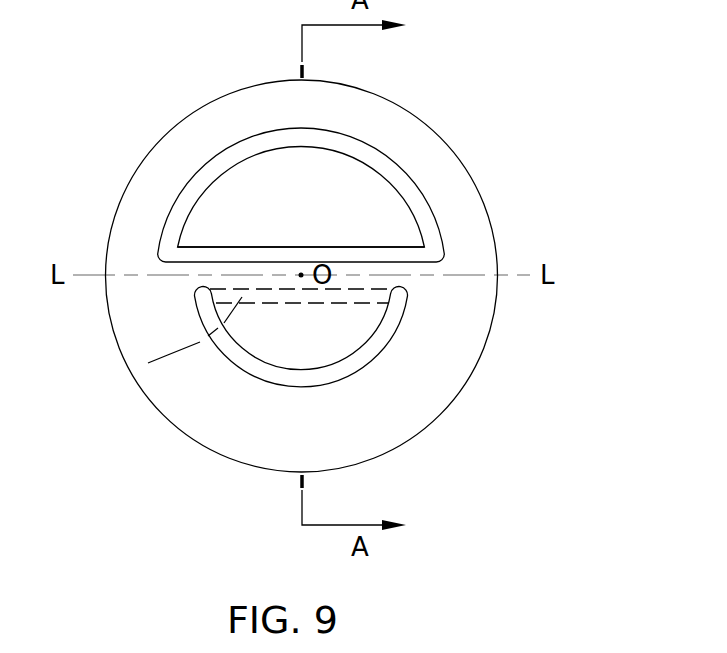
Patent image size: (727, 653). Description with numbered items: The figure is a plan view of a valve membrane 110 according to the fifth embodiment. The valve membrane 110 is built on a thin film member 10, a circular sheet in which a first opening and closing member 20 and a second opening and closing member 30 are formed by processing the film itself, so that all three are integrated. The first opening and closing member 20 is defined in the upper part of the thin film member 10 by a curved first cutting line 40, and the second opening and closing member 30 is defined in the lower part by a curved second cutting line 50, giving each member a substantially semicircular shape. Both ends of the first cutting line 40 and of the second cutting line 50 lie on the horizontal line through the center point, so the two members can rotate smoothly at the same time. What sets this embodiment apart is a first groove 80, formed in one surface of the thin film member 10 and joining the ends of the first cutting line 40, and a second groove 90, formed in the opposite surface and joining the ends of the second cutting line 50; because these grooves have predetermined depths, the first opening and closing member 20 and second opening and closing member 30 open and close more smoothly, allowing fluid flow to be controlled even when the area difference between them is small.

The thin film member 10 is at (210, 127).
The first opening and closing member 20 is at (378, 208).
The second opening and closing member 30 is at (333, 343).
The first cutting line 40 is at (178, 212).
The second cutting line 50 is at (248, 360).
The first groove 80 is at (200, 257).
The second groove 90 is at (142, 365).
The valve membrane 110 is at (438, 95).